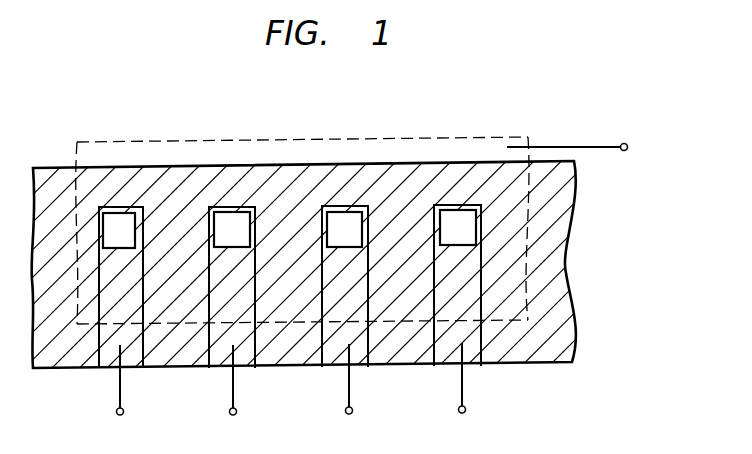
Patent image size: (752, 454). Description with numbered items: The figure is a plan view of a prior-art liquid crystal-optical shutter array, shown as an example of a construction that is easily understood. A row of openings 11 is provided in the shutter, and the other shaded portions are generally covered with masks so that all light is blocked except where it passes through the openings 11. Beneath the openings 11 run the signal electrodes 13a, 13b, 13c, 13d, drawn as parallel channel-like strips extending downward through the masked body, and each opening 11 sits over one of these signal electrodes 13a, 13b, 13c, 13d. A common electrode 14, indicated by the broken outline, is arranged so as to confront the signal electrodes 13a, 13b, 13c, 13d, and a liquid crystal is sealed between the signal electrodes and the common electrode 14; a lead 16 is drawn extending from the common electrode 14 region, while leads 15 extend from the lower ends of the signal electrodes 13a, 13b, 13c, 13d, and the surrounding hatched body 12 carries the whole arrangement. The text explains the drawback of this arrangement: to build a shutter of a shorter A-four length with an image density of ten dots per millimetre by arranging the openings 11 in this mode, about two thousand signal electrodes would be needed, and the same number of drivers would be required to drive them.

The opening 11 is at (116, 218).
The substrate body 12 is at (550, 346).
The signal electrode 13a is at (101, 345).
The signal electrode 13b is at (216, 345).
The signal electrode 13c is at (333, 343).
The signal electrode 13d is at (445, 343).
The common electrode 14 is at (497, 137).
The lead wire 15 is at (295, 393).
The lead wire 16 is at (580, 147).